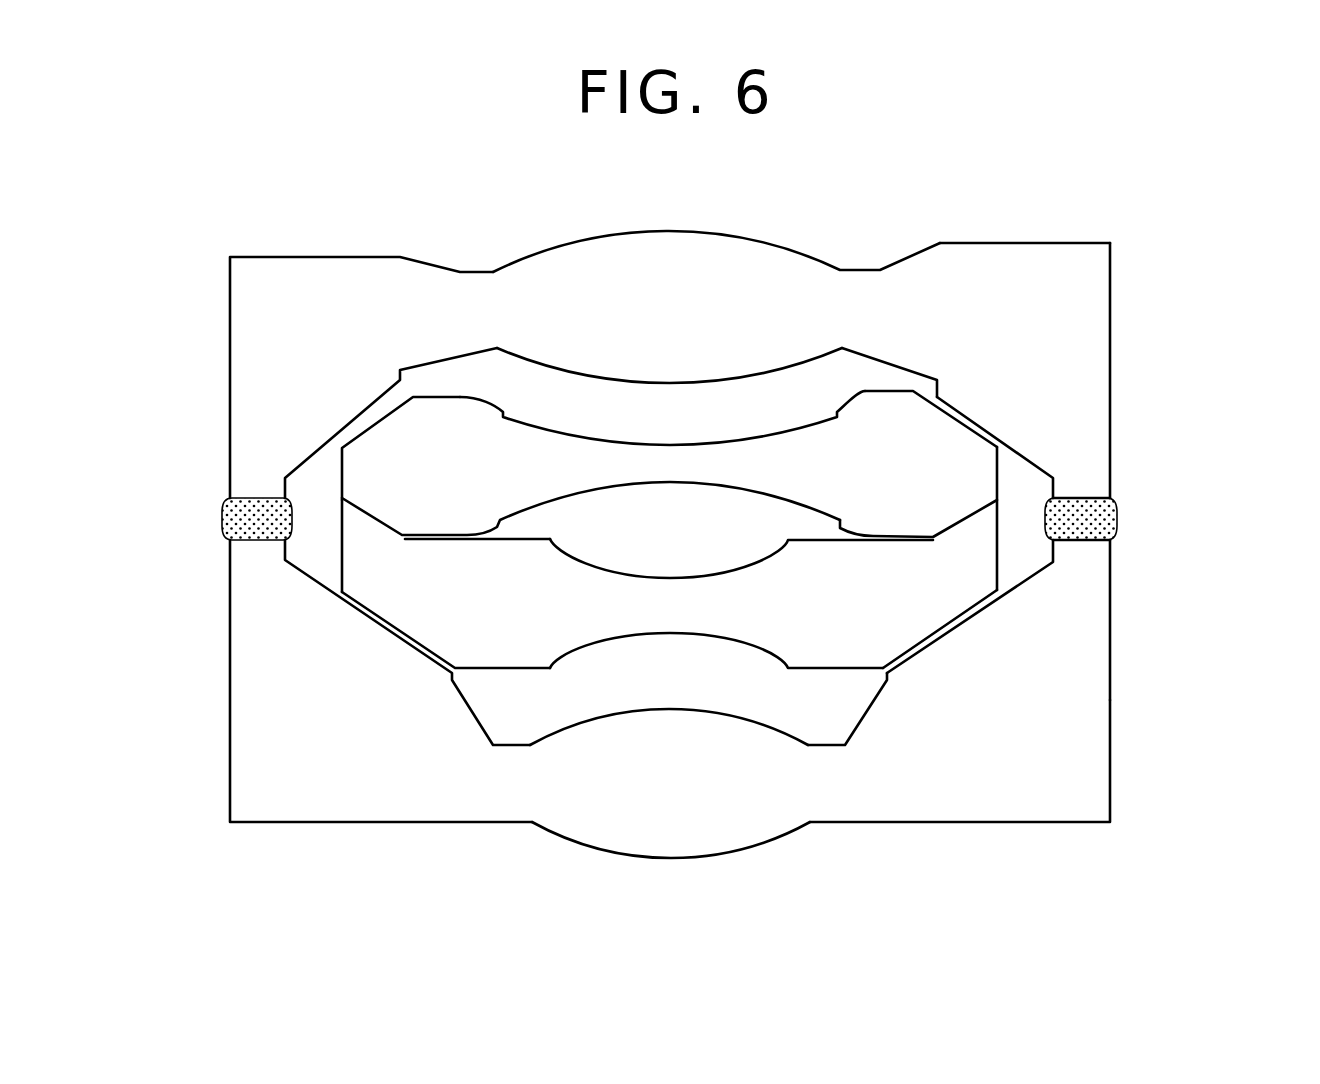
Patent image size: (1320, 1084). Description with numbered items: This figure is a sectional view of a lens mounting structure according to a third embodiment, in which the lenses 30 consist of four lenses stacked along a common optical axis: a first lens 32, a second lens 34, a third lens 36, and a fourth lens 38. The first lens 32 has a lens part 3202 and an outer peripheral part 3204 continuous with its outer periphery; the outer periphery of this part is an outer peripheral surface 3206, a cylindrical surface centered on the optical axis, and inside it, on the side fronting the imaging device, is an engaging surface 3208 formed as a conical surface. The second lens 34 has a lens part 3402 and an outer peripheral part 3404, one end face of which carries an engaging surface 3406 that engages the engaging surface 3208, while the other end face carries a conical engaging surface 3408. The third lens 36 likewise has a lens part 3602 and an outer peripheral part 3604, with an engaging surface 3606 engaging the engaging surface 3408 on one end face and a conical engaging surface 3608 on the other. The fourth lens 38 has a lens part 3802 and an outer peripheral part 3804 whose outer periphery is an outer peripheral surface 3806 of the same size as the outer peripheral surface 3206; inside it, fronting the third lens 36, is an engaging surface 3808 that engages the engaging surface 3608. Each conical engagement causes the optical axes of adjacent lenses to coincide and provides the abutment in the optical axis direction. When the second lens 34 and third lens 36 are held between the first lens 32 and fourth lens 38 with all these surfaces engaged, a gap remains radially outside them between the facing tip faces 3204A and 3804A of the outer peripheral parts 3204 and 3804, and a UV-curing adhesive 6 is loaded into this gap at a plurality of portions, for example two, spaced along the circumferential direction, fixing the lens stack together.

The lenses 30 is at (834, 226).
The first lens 32 is at (222, 272).
The second lens 34 is at (362, 432).
The third lens 36 is at (367, 612).
The fourth lens 38 is at (228, 768).
The UV-curing adhesive 6 is at (222, 518).
The lens part 3202 is at (722, 257).
The outer peripheral part 3204 is at (1040, 285).
The tip face 3204A is at (1115, 505).
The outer peripheral surface 3206 is at (1112, 292).
The engaging surface 3208 is at (1000, 445).
The lens part 3402 is at (690, 472).
The outer peripheral part 3404 is at (905, 430).
The engaging surface 3406 is at (965, 440).
The engaging surface 3408 is at (1000, 590).
The lens part 3602 is at (692, 597).
The outer peripheral part 3604 is at (903, 610).
The engaging surface 3606 is at (953, 525).
The engaging surface 3608 is at (957, 627).
The lens part 3802 is at (708, 825).
The outer peripheral part 3804 is at (1050, 765).
The tip face 3804A is at (1115, 530).
The outer peripheral surface 3806 is at (1112, 632).
The engaging surface 3808 is at (878, 660).